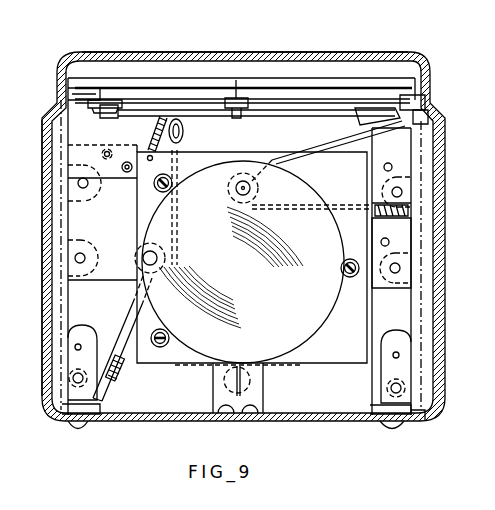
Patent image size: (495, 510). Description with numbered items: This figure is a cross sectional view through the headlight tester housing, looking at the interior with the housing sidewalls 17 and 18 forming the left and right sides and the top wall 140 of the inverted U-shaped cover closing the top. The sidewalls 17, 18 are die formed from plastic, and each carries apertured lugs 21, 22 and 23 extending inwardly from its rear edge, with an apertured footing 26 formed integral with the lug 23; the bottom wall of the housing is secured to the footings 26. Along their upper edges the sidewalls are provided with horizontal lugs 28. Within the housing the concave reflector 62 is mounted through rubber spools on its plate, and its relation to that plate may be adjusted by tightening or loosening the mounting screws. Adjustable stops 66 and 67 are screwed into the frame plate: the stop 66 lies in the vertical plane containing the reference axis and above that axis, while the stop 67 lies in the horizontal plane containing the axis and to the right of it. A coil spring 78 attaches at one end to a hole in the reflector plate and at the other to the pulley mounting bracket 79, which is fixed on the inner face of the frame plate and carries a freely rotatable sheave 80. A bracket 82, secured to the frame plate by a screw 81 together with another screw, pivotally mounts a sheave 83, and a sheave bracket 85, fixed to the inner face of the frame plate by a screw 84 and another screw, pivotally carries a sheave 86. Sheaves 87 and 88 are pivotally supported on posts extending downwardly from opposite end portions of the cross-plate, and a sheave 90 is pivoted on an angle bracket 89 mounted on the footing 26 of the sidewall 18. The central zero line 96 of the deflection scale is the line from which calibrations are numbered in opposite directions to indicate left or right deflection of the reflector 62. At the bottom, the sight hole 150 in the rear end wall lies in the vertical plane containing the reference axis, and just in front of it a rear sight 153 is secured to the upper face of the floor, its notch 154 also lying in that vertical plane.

The sidewall 17 is at (437, 250).
The sidewall 18 is at (48, 185).
The top wall 140 is at (262, 56).
The horizontal lug 28 is at (425, 104).
The sheave 88 is at (108, 104).
The pulley mounting bracket 79 is at (112, 136).
The central zero line 96 is at (242, 86).
The sheave 87 is at (362, 116).
The sheave 83 is at (428, 121).
The bracket 82 is at (405, 147).
The coil spring 78 is at (154, 126).
The sheave 80 is at (185, 130).
The screw 81 is at (384, 167).
The apertured lug 21 is at (85, 195).
The apertured lug 22 is at (85, 250).
The apertured lug 23 is at (392, 345).
The sheave 86 is at (405, 208).
The sheave bracket 85 is at (400, 230).
The screw 84 is at (381, 242).
The concave reflector 62 is at (310, 331).
The adjustable stop 66 is at (252, 190).
The adjustable stop 67 is at (154, 259).
The angle bracket 89 is at (100, 398).
The sheave 90 is at (120, 383).
The apertured footing 26 is at (380, 408).
The rear sight 153 is at (258, 400).
The sight hole 150 is at (253, 375).
The notch 154 is at (250, 383).